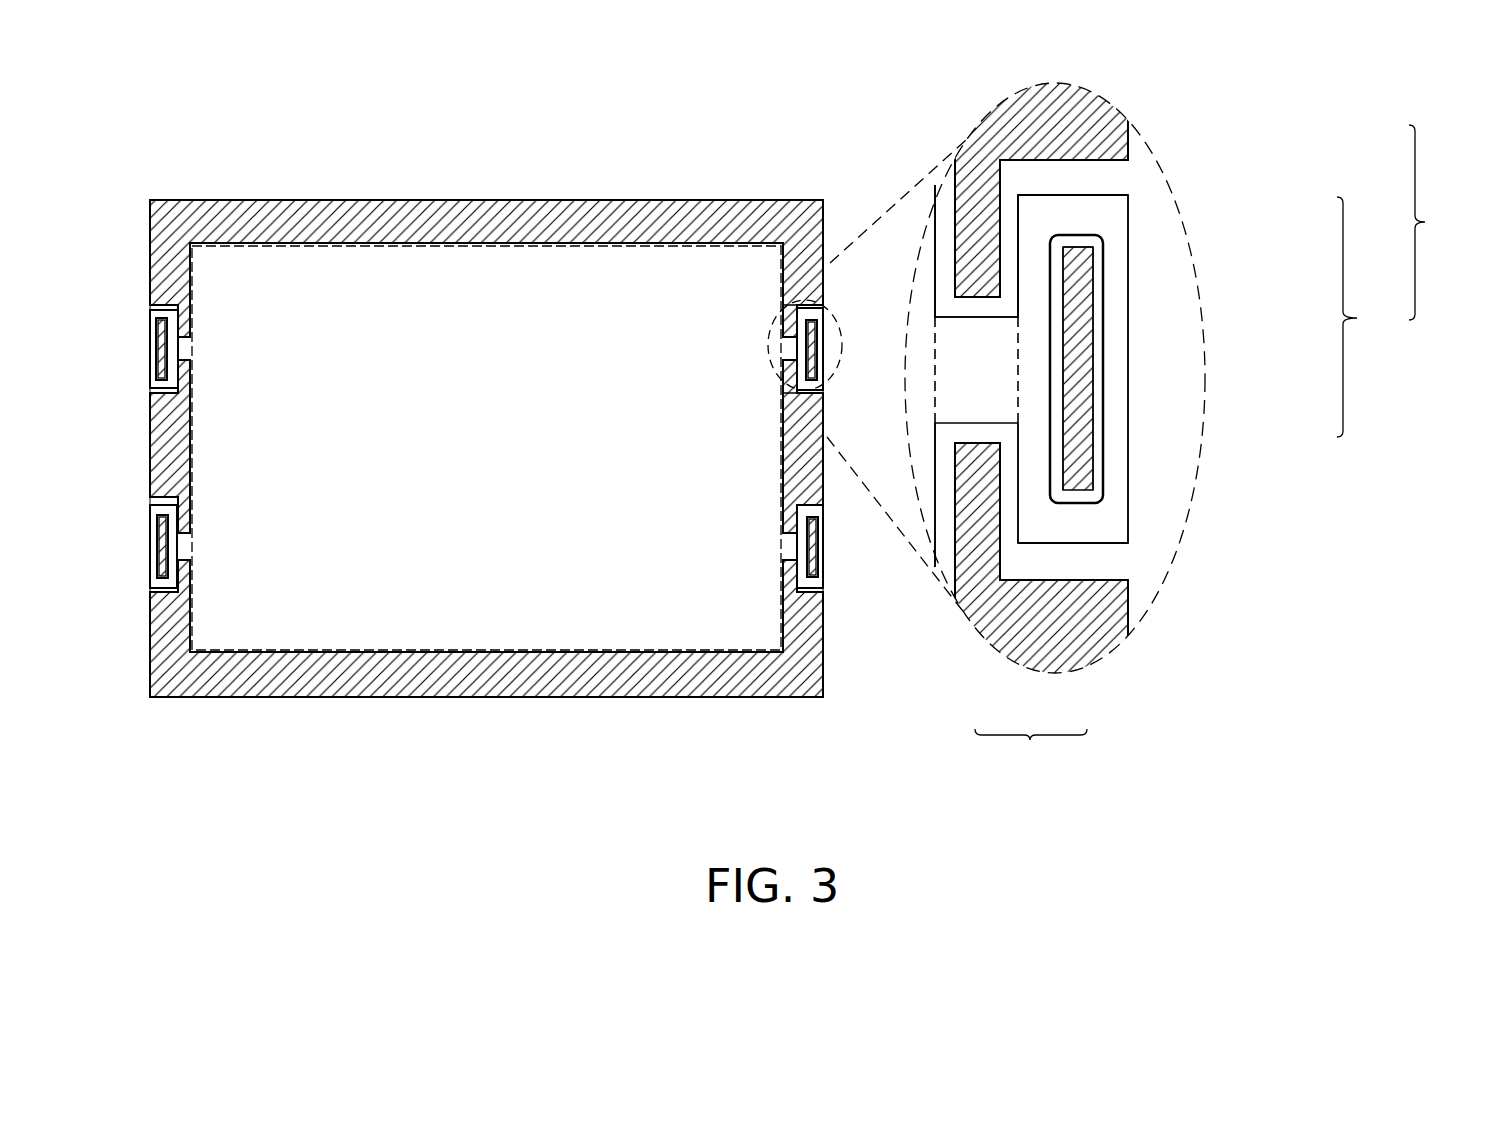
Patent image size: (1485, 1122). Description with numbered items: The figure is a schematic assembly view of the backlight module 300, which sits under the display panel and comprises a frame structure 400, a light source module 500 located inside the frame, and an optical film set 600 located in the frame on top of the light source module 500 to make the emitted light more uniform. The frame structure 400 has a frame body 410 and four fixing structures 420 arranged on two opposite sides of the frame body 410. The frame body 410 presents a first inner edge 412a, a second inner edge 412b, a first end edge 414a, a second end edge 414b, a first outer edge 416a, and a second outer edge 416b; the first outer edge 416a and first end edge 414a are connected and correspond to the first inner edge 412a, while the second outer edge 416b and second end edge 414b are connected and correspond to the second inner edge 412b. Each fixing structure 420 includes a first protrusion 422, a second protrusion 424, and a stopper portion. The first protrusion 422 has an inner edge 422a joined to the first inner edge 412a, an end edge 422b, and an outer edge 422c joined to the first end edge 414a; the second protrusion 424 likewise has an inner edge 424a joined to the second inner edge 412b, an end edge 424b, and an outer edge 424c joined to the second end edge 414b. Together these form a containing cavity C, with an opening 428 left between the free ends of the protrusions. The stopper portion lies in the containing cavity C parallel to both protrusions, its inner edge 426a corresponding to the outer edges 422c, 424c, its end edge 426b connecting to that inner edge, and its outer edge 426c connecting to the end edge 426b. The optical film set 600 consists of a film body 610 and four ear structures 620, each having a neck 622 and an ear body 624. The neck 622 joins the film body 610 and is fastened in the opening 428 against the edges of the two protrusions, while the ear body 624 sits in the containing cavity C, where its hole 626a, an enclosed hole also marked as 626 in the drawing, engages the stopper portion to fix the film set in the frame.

The backlight module 300 is at (773, 779).
The frame structure 400 is at (1438, 222).
The frame body 410 is at (388, 205).
The first inner edge 412a is at (781, 283).
The second inner edge 412b is at (781, 458).
The first end edge 414a is at (810, 310).
The second end edge 414b is at (811, 390).
The first outer edge 416a is at (826, 247).
The second outer edge 416b is at (827, 479).
The fixing structure 420 is at (1372, 317).
The first protrusion 422 is at (1131, 251).
The inner edge of the first protrusion 422a is at (1002, 244).
The end edge of the first protrusion 422b is at (949, 276).
The outer edge of the first protrusion 422c is at (1025, 196).
The second protrusion 424 is at (1274, 380).
The inner edge of the second protrusion 424a is at (983, 441).
The end edge of the second protrusion 424b is at (1005, 503).
The outer edge of the second protrusion 424c is at (1060, 497).
The inner edge of the stopper portion 426a is at (1056, 326).
The end edge of the stopper portion 426b is at (1084, 244).
The outer edge of the stopper portion 426c is at (1104, 318).
The opening 428 is at (778, 366).
The containing cavity C is at (825, 345).
The light source module 500 is at (352, 656).
The optical film set 600 is at (540, 622).
The film body 610 is at (935, 568).
The ear structure 620 is at (1031, 751).
The neck 622 is at (973, 430).
The ear body 624 is at (1060, 518).
The clamping portion 626 is at (1274, 262).
The hole 626a is at (1102, 505).